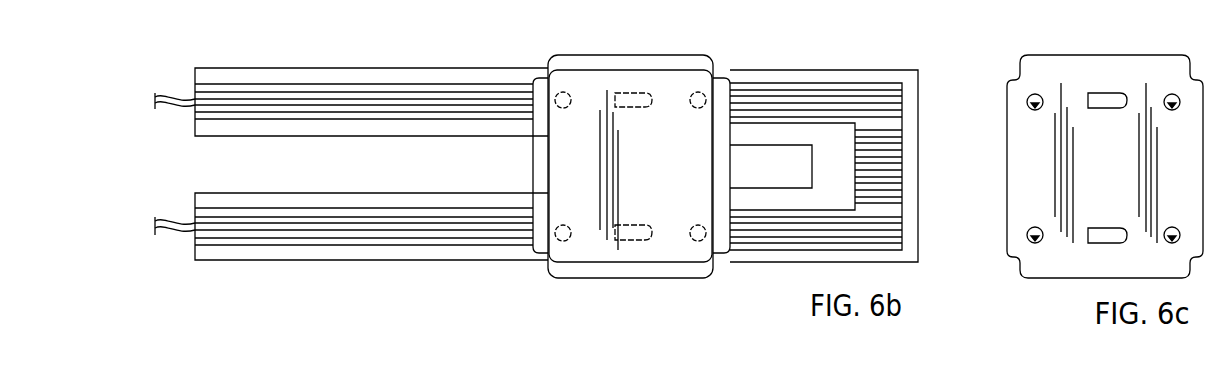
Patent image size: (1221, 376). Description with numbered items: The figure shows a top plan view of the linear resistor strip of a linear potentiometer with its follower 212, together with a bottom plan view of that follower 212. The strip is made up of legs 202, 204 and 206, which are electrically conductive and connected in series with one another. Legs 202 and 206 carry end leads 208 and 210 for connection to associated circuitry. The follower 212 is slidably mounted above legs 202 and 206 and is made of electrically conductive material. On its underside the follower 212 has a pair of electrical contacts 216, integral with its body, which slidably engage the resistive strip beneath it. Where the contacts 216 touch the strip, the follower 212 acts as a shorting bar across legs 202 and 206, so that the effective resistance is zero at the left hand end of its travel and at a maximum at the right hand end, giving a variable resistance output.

In FIG. 6B, the leg 202 is at (375, 68).
In FIG. 6B, the leg 204 is at (903, 157).
In FIG. 6B, the leg 206 is at (380, 261).
In FIG. 6B, the end lead 208 is at (165, 110).
In FIG. 6B, the end lead 210 is at (165, 237).
In FIG. 6B, the follower 212 is at (677, 54).
In FIG. 6C, the follower 212 is at (1113, 55).
In FIG. 6C, the electrical contacts 216 is at (1108, 110).